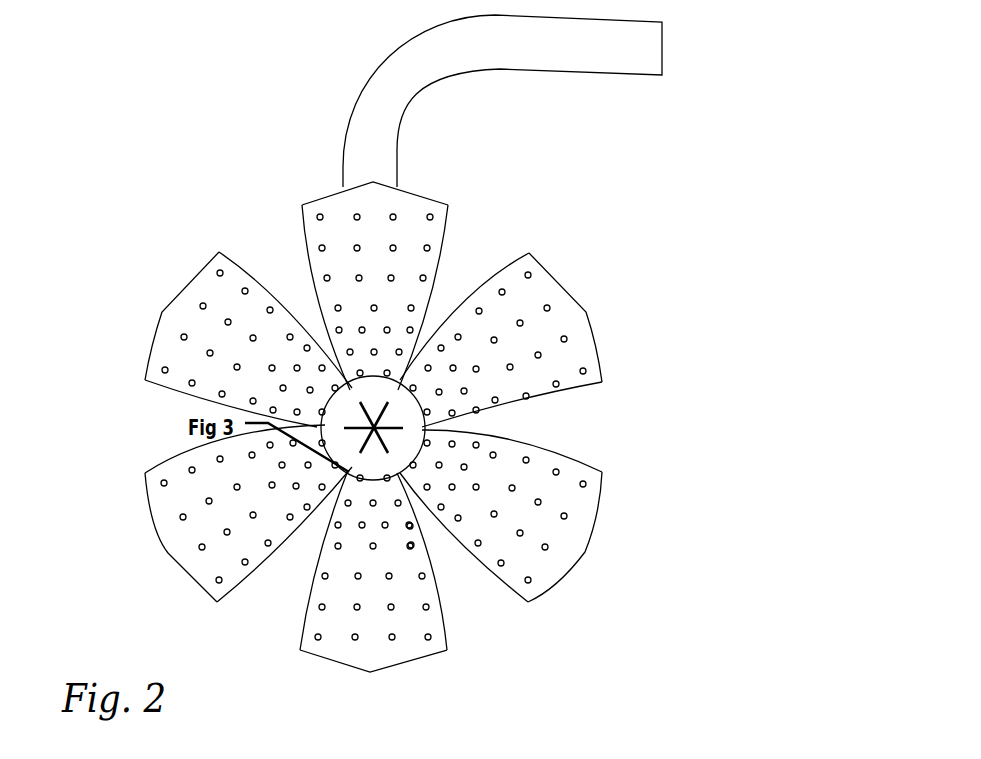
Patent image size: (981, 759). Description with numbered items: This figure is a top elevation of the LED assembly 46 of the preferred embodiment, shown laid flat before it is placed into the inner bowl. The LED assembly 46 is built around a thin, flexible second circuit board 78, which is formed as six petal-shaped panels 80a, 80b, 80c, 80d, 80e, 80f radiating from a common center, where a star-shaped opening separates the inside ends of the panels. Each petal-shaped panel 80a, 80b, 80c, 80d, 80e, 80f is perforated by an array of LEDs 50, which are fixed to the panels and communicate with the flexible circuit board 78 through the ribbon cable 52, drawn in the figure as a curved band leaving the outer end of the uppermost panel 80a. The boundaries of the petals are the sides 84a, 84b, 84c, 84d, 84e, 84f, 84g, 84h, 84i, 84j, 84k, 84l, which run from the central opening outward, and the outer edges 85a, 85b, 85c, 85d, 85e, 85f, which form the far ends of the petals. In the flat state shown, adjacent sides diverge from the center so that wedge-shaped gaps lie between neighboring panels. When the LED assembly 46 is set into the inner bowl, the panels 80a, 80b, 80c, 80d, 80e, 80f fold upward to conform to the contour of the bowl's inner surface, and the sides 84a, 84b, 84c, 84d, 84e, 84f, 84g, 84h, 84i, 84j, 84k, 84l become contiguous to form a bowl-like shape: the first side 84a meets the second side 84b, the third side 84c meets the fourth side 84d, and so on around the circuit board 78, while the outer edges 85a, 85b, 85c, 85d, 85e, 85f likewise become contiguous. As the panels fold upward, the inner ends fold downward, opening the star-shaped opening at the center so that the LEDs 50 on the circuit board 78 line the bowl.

The LED assembly 46 is at (140, 118).
The second circuit board 78 is at (186, 233).
The ribbon cable 52 is at (388, 62).
The LEDs 50 is at (359, 247).
The petal-shaped panel 80a is at (369, 268).
The petal-shaped panel 80b is at (510, 326).
The petal-shaped panel 80c is at (518, 528).
The petal-shaped panel 80d is at (368, 593).
The petal-shaped panel 80e is at (218, 538).
The petal-shaped panel 80f is at (223, 322).
The first side 84a is at (446, 257).
The second side 84b is at (458, 307).
The third side 84c is at (600, 383).
The fourth side 84d is at (520, 442).
The side 84e is at (500, 590).
The side 84f is at (449, 634).
The side 84g is at (300, 636).
The side 84h is at (232, 595).
The side 84i is at (162, 467).
The side 84j is at (152, 383).
The side 84k is at (241, 261).
The side 84l is at (301, 238).
The outer edge 85a is at (402, 186).
The outer edge 85b is at (545, 265).
The outer edge 85c is at (593, 517).
The outer edge 85d is at (407, 664).
The outer edge 85e is at (152, 517).
The outer edge 85f is at (145, 355).